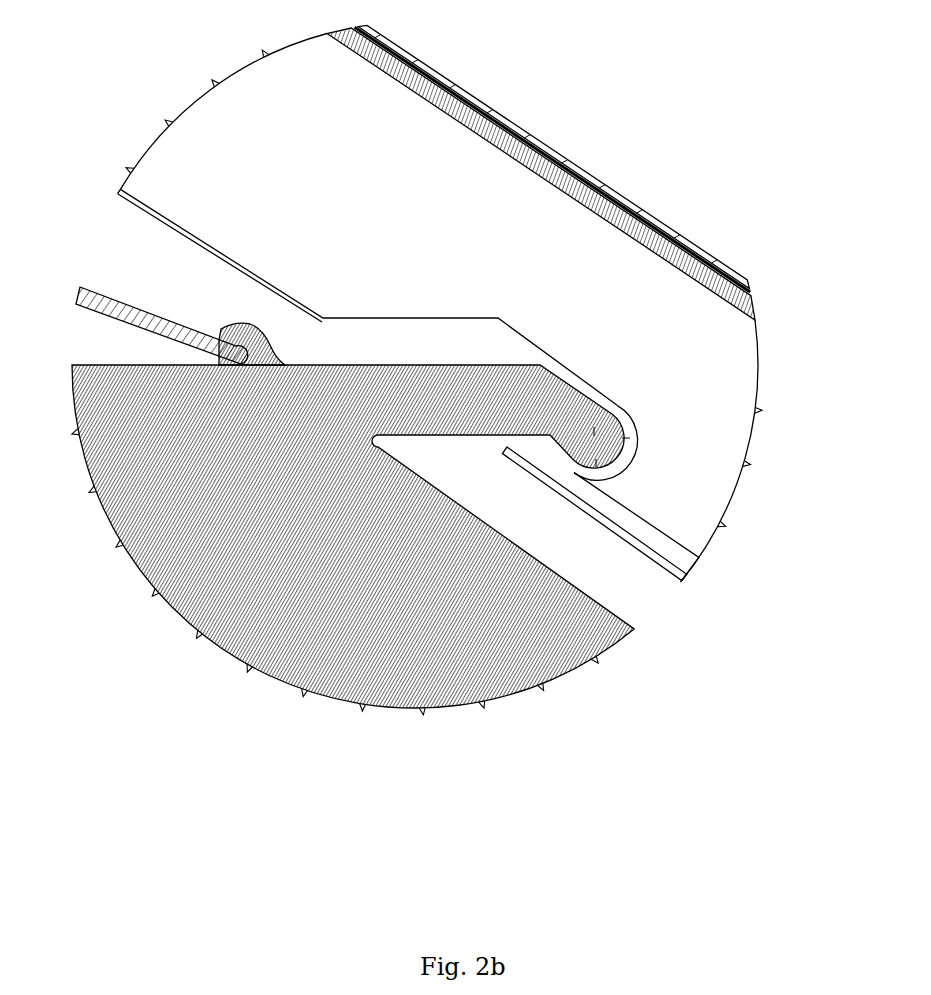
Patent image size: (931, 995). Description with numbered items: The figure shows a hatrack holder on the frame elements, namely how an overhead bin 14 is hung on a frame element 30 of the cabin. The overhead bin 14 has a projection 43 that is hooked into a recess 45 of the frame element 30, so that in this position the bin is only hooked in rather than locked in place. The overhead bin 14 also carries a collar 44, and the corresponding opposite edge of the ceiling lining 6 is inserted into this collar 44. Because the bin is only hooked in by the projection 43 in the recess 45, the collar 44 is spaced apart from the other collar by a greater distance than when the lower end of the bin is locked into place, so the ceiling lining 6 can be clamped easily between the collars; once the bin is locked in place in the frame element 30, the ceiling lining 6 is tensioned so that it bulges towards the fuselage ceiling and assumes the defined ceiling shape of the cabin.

The overhead bin 14 is at (512, 623).
The frame element 30 is at (510, 187).
The collar 44 is at (248, 325).
The projection 43 is at (622, 414).
The recess 45 is at (632, 449).
The ceiling lining 6 is at (93, 297).